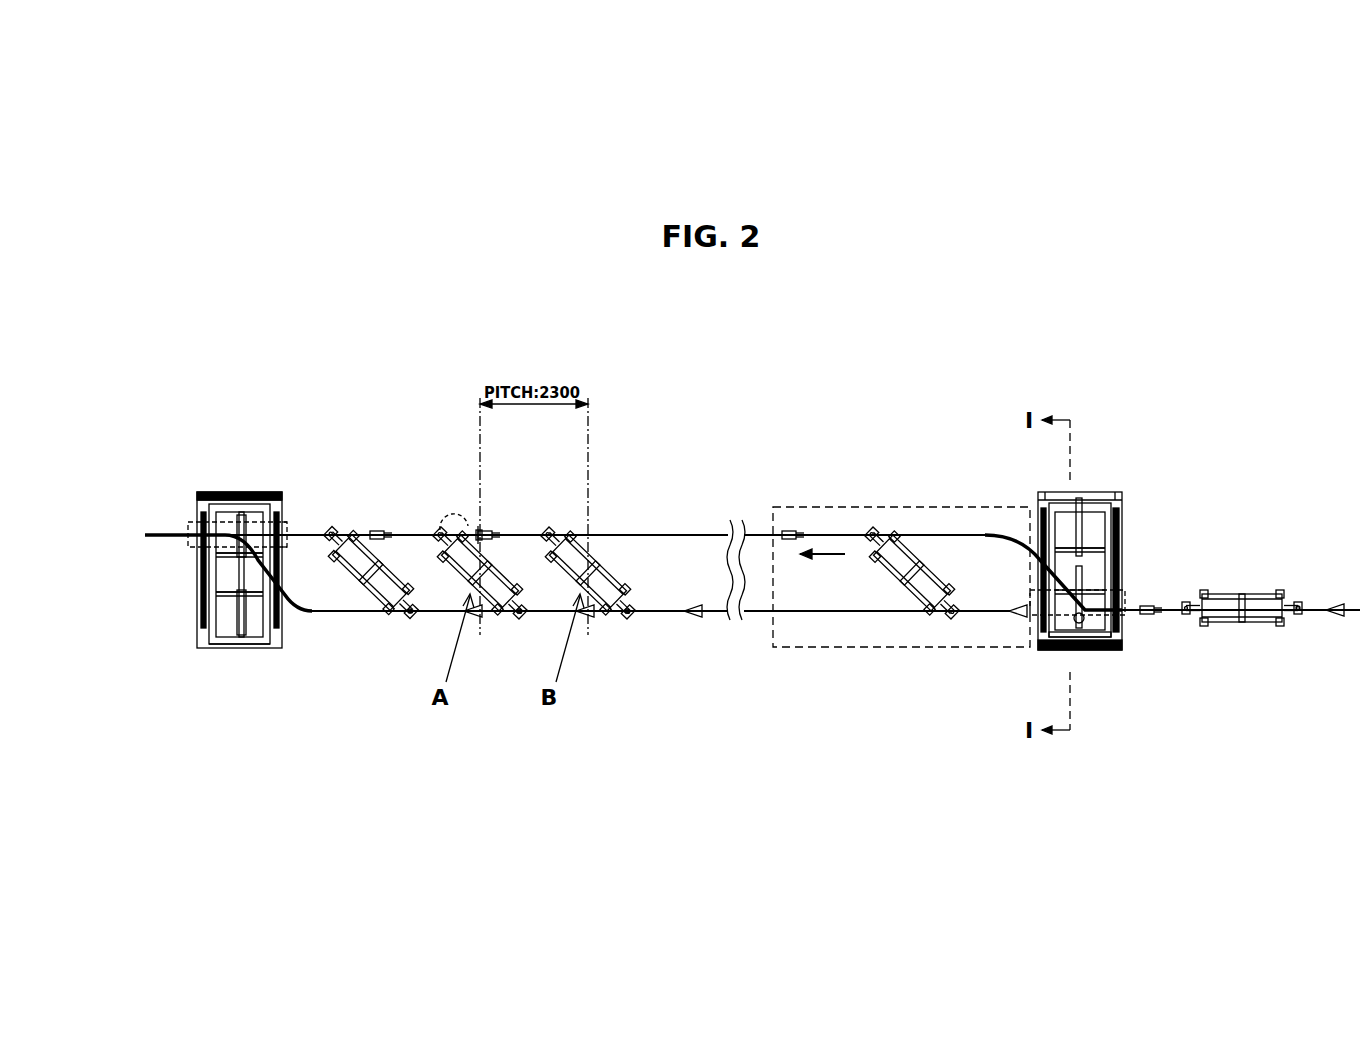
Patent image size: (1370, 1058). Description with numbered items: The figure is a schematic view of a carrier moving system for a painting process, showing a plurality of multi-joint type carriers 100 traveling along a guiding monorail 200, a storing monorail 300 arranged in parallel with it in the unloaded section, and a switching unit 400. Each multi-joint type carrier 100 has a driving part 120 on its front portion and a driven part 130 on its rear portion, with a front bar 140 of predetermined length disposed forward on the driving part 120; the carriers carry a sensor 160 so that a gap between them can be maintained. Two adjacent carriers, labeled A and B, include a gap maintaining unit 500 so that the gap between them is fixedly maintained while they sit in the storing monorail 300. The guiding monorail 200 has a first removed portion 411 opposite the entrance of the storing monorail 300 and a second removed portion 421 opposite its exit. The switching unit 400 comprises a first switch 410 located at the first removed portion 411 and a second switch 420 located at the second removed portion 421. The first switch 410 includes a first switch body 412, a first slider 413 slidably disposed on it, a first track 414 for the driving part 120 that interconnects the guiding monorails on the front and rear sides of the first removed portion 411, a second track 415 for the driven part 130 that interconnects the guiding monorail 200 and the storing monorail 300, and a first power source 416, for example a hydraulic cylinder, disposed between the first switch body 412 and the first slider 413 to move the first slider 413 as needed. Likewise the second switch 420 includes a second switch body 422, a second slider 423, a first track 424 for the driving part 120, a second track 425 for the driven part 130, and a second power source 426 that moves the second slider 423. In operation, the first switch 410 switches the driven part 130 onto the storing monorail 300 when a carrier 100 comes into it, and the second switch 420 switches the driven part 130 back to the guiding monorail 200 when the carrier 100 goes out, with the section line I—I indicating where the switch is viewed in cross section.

The multi-joint type carrier 100 is at (382, 602).
The driving part 120 is at (333, 530).
The driven part 130 is at (408, 616).
The front bar 140 is at (528, 534).
The sensor 160 is at (480, 528).
The guiding monorail 200 is at (688, 528).
The storing monorail 300 is at (845, 636).
The switching unit 400 is at (1132, 468).
The first switch 410 is at (1097, 486).
The first removed portion 411 is at (1095, 572).
The first switch body 412 is at (1050, 492).
The first slider 413 is at (1112, 502).
The first track 414 is at (1094, 650).
The second track 415 is at (1043, 656).
The first power source 416 is at (1085, 548).
The second switch 420 is at (262, 490).
The second removed portion 421 is at (287, 522).
The second switch body 422 is at (216, 648).
The second slider 423 is at (258, 636).
The first track 424 is at (238, 548).
The second track 425 is at (220, 492).
The second power source 426 is at (232, 610).
The gap maintaining unit 500 is at (442, 528).